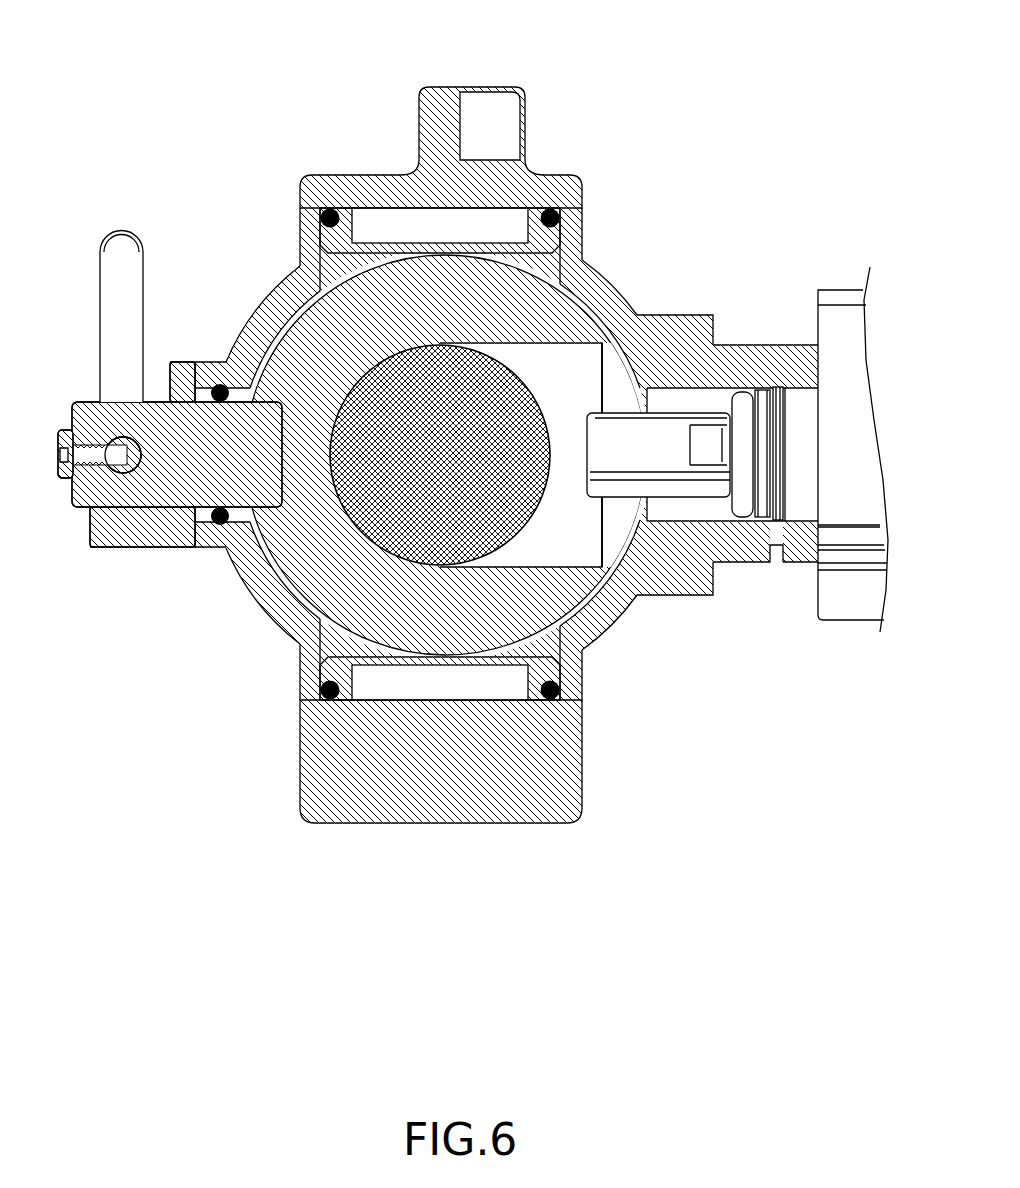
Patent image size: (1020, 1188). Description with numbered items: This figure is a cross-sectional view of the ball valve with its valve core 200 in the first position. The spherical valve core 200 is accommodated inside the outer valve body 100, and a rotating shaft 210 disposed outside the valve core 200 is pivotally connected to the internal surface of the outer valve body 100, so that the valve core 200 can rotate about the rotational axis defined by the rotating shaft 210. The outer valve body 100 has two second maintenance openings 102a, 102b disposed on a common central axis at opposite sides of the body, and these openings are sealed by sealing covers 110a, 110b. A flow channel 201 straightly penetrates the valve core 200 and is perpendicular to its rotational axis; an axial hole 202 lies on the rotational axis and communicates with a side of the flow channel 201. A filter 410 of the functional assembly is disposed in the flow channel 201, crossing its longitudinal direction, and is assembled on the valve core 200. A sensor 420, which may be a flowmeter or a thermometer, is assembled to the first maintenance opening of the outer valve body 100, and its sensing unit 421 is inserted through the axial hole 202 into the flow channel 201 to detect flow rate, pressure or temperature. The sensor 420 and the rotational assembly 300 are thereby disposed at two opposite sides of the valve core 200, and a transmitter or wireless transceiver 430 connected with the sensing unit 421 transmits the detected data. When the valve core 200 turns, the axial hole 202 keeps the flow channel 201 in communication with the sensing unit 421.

The outer valve body 100 is at (232, 335).
The second maintenance opening 102a is at (538, 262).
The second maintenance opening 102b is at (538, 648).
The sealing cover 110a is at (445, 103).
The sealing cover 110b is at (565, 787).
The valve core 200 is at (347, 277).
The flow channel 201 is at (556, 533).
The axial hole 202 is at (603, 372).
The rotating shaft 210 is at (160, 482).
The rotational assembly 300 is at (120, 248).
The filter 410 is at (640, 378).
The sensor 420 is at (778, 350).
The sensing unit 421 is at (667, 430).
The wireless transceiver 430 is at (840, 290).